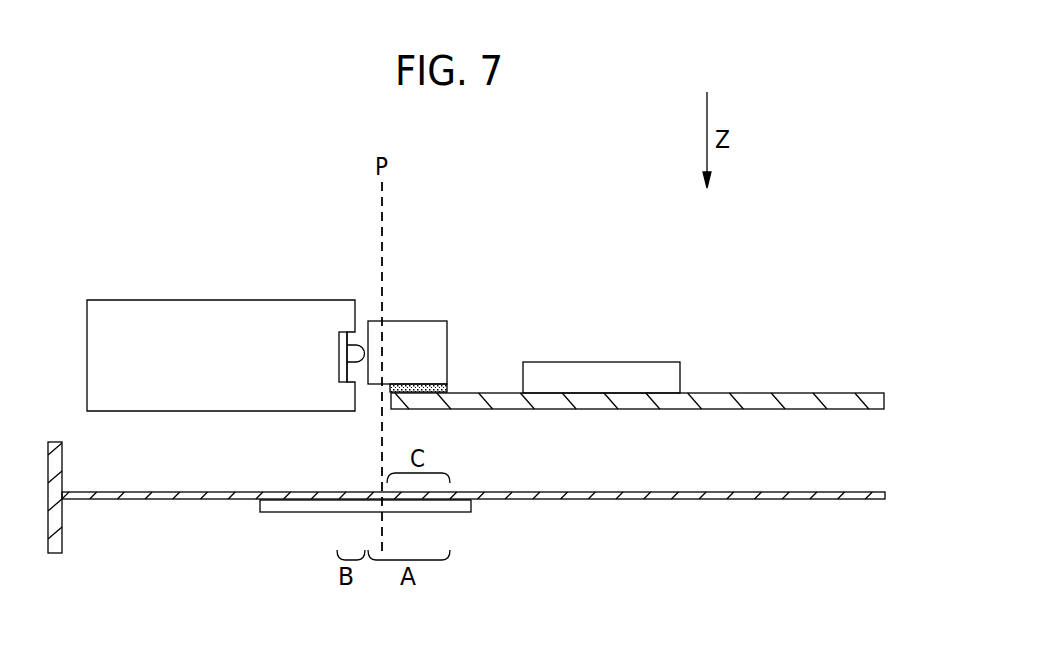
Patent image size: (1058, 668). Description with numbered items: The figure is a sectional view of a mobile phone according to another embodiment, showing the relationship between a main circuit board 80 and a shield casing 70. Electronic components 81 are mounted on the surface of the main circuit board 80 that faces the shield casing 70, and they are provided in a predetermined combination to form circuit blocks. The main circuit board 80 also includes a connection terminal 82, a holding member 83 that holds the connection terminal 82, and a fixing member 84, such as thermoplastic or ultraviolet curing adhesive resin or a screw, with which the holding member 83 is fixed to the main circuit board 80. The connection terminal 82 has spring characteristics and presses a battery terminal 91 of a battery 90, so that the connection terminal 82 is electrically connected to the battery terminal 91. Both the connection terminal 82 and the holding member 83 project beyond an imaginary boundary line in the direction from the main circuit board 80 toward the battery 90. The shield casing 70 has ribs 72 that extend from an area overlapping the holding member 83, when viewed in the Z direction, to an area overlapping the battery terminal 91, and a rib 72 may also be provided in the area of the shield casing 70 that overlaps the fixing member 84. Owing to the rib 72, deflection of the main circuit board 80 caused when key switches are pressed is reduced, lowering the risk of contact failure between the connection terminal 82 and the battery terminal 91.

The shield casing 70 is at (130, 499).
The rib 72 is at (462, 503).
The main circuit board 80 is at (540, 257).
The electronic components 81 is at (616, 378).
The connection terminal 82 is at (354, 332).
The holding member 83 is at (441, 363).
The fixing member 84 is at (392, 383).
The battery 90 is at (186, 318).
The battery terminal 91 is at (350, 351).